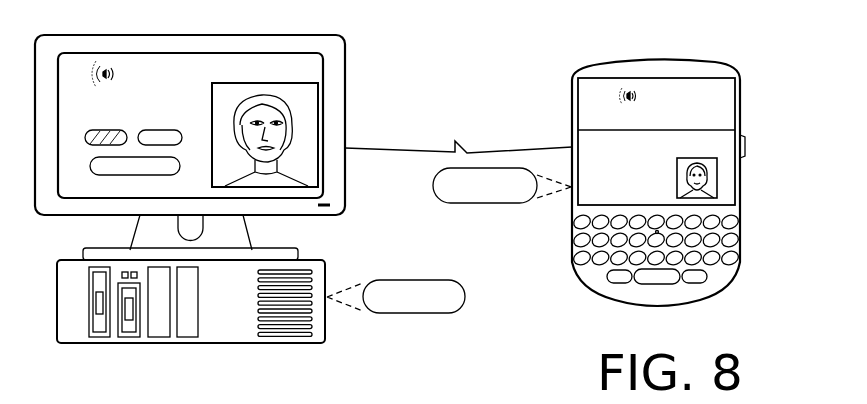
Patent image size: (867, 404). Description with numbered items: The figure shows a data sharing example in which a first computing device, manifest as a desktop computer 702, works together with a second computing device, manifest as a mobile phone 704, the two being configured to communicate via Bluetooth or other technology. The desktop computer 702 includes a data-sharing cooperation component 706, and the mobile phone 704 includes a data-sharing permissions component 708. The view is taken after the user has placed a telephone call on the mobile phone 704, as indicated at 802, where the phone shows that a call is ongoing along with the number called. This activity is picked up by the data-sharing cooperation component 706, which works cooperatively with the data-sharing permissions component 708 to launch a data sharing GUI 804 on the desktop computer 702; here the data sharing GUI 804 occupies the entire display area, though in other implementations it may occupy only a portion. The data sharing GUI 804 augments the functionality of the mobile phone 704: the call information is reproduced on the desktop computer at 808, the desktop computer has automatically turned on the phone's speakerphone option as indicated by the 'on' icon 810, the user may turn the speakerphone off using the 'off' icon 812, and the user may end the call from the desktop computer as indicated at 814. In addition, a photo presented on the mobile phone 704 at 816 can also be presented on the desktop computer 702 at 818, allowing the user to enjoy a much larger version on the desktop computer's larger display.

The first computing device 702 is at (323, 262).
The second computing device 704 is at (742, 80).
The data-sharing cooperation component 706 is at (396, 296).
The data-sharing permissions component 708 is at (502, 185).
The telephone call indication 802 is at (586, 94).
The data sharing GUI 804 is at (324, 71).
The reproduced call information 808 is at (84, 70).
The 'on' icon 810 is at (85, 136).
The 'off' icon 812 is at (182, 136).
The end call option 814 is at (90, 165).
The photo on mobile phone 816 is at (677, 166).
The photo on desktop computer 818 is at (228, 83).